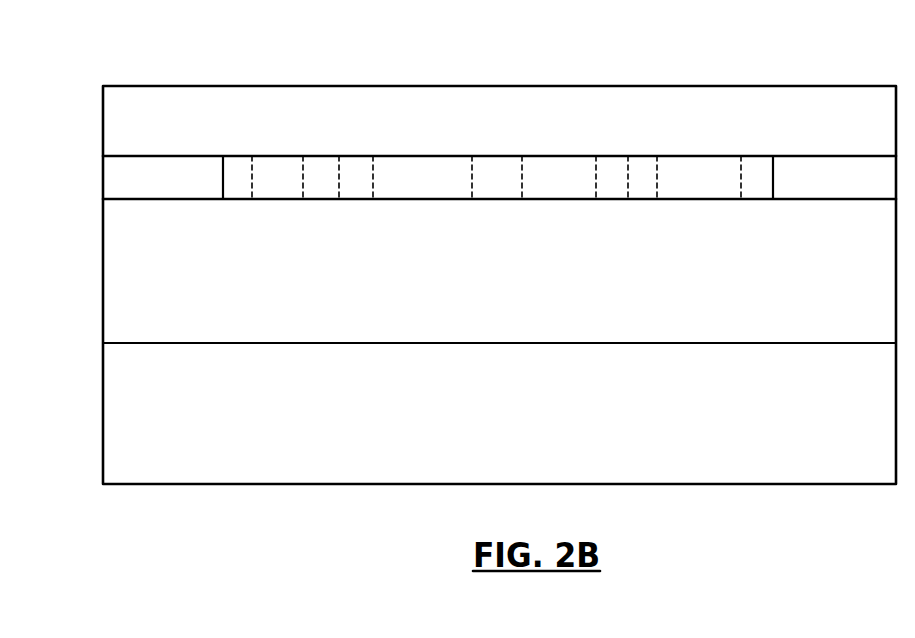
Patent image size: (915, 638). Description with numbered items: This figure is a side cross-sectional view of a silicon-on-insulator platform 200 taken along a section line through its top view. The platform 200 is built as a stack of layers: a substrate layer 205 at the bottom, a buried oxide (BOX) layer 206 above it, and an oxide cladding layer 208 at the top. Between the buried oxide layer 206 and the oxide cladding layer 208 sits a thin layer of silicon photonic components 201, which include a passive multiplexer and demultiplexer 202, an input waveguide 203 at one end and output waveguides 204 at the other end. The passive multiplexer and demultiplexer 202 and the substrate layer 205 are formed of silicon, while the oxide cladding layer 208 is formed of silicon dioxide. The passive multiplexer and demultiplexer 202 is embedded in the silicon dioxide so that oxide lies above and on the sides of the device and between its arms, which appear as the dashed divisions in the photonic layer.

The silicon-on-insulator (SOI) platform 200 is at (789, 62).
The silicon photonic components 201 is at (103, 174).
The passive multiplexer and demultiplexer 202 is at (222, 186).
The input waveguide 203 is at (173, 170).
The output waveguides 204 is at (833, 173).
The substrate layer 205 is at (103, 372).
The buried oxide (BOX) layer 206 is at (103, 257).
The oxide cladding layer 208 is at (193, 84).